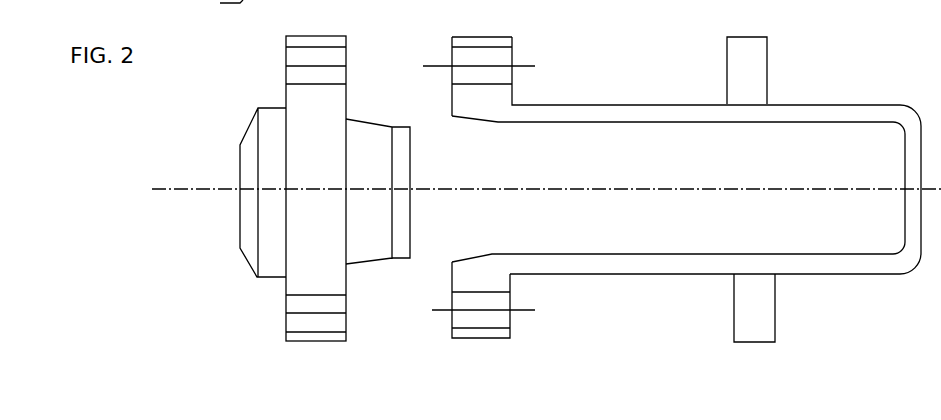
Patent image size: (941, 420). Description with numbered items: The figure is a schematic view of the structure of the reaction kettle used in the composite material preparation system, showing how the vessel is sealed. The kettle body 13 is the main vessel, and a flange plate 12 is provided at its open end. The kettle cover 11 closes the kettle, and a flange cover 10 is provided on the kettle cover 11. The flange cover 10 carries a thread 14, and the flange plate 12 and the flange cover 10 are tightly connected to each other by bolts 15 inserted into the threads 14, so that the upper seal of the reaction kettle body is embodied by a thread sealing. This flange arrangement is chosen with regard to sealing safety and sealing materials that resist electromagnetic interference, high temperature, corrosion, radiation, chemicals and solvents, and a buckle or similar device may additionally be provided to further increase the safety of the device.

The flange cover 10 is at (316, 342).
The kettle cover 11 is at (368, 262).
The flange plate 12 is at (485, 338).
The kettle body 13 is at (652, 275).
The thread 14 is at (327, 315).
The bolt 15 is at (490, 310).